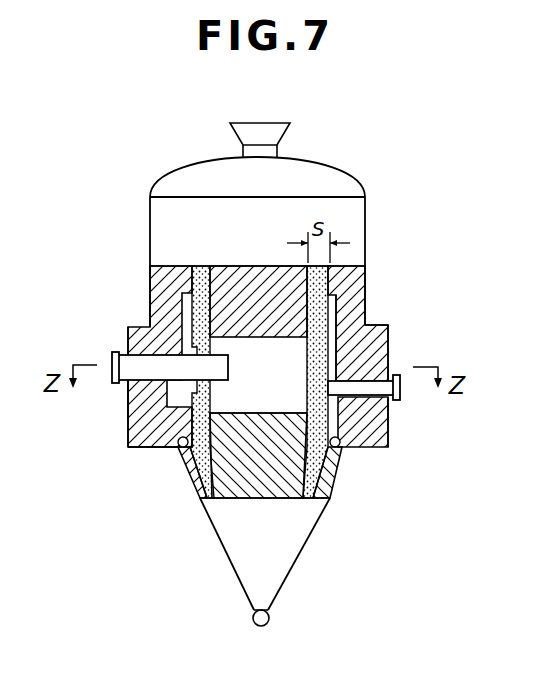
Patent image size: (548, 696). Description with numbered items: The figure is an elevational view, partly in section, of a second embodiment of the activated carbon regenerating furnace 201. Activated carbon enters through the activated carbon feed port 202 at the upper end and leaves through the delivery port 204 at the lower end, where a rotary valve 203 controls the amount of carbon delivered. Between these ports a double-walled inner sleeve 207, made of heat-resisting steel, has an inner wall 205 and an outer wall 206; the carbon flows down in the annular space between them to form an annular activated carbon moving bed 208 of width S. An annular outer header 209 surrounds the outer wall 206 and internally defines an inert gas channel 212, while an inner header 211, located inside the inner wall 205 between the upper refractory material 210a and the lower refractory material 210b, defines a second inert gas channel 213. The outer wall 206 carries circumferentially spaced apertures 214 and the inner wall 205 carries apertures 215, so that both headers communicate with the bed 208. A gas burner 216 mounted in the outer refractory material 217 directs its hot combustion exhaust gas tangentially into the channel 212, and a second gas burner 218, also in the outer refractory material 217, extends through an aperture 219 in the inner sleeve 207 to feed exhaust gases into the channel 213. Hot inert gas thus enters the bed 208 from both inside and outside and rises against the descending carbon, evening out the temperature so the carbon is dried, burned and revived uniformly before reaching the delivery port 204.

The furnace 201 is at (332, 160).
The activated carbon feed port 202 is at (263, 135).
The rotary valve 203 is at (270, 616).
The delivery port 204 is at (255, 627).
The inner wall 205 is at (295, 283).
The outer wall 206 is at (336, 297).
The inner sleeve 207 is at (165, 285).
The annular activated carbon moving bed 208 is at (338, 338).
The annular outer header 209 is at (124, 434).
The upper refractory material 210a is at (238, 278).
The lower refractory material 210b is at (268, 500).
The inner header 211 is at (190, 493).
The inert gas channel 212 is at (388, 337).
The inert gas channel 213 is at (272, 398).
The apertures 214 is at (373, 440).
The apertures 215 is at (213, 402).
The gas burner 216 is at (400, 393).
The outer refractory material 217 is at (388, 433).
The gas burner 218 is at (120, 353).
The aperture 219 is at (130, 400).